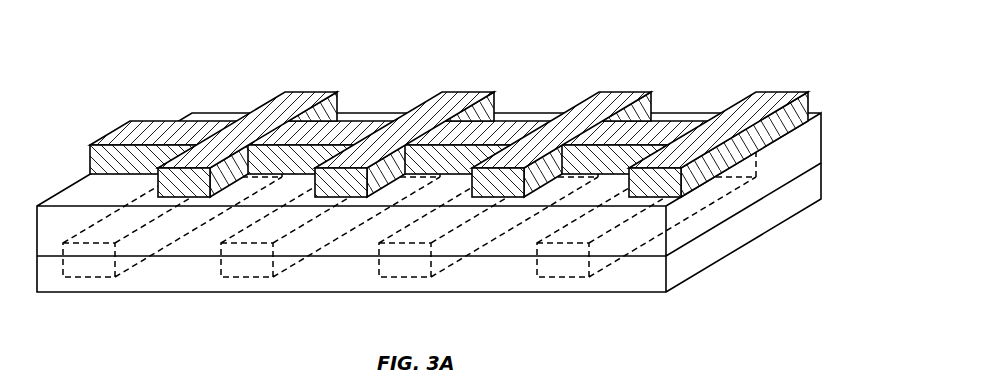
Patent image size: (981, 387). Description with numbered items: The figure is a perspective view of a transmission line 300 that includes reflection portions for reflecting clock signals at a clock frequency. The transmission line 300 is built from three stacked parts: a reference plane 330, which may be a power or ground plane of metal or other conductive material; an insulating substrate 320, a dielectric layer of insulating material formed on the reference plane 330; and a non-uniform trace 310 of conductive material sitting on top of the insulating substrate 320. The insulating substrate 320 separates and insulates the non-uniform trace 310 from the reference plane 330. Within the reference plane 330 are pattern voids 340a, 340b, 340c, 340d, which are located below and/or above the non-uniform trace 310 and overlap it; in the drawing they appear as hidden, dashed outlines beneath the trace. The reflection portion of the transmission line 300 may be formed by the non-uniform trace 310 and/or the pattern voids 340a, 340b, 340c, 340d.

The transmission line 300 is at (447, 175).
The non-uniform trace 310 is at (111, 134).
The insulating substrate 320 is at (818, 143).
The reference plane 330 is at (818, 185).
The pattern void 340a is at (83, 278).
The pattern void 340b is at (245, 278).
The pattern void 340c is at (405, 278).
The pattern void 340d is at (563, 278).